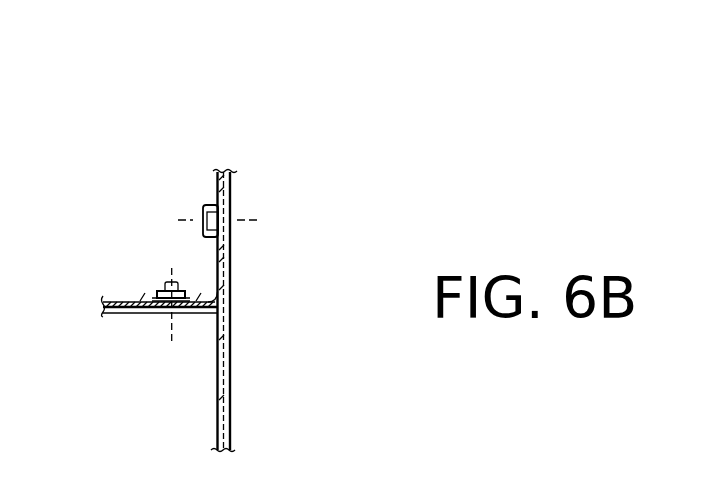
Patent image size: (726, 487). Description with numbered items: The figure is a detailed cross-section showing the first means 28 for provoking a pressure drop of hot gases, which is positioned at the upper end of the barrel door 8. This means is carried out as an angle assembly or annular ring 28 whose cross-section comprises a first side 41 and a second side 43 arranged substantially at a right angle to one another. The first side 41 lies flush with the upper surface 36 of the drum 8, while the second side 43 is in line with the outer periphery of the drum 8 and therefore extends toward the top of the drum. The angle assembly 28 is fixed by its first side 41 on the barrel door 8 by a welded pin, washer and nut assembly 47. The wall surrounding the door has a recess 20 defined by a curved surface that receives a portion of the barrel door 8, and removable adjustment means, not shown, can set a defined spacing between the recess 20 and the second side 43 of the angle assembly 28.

The barrel door 8 is at (130, 373).
The recess 20 is at (230, 205).
The angle assembly 28 is at (201, 173).
The upper surface 36 is at (215, 301).
The first side 41 is at (140, 301).
The second side 43 is at (228, 268).
The welded pin, washer and nut assembly 47 is at (146, 265).